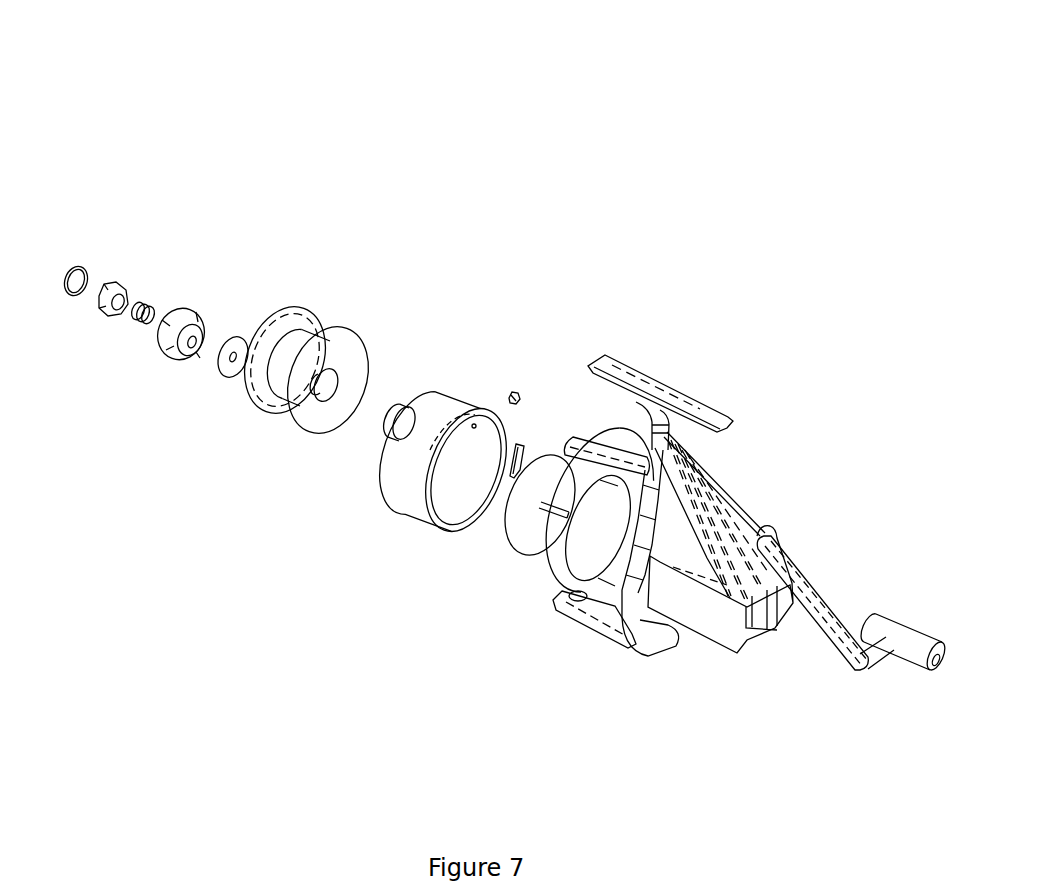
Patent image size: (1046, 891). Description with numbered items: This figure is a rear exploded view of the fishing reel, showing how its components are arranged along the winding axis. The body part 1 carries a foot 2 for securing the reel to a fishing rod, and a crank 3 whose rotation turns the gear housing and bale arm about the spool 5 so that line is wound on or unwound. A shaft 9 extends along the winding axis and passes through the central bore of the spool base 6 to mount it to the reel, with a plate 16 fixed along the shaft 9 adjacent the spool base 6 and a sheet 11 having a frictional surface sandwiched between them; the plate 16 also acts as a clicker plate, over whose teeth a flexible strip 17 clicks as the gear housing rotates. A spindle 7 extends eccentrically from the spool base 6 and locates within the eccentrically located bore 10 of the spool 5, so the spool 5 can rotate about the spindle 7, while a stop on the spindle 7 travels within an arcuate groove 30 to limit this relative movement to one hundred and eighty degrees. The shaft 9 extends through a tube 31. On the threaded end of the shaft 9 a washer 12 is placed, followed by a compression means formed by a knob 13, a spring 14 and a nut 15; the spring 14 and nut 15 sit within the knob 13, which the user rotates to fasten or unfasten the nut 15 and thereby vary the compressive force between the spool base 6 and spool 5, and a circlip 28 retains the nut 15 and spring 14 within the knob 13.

The body part 1 is at (702, 613).
The foot 2 is at (670, 385).
The crank 3 is at (813, 585).
The spool 5 is at (293, 348).
The spool base 6 is at (458, 402).
The spindle 7 is at (396, 404).
The shaft 9 is at (552, 512).
The bore 10 is at (315, 388).
The sheet 11 is at (523, 503).
The washer 12 is at (231, 340).
The knob 13 is at (198, 312).
The spring 14 is at (150, 304).
The nut 15 is at (120, 284).
The plate 16 is at (565, 515).
The flexible strip 17 is at (523, 462).
The circlip 28 is at (78, 266).
The arcuate groove 30 is at (333, 367).
The tube 31 is at (517, 393).